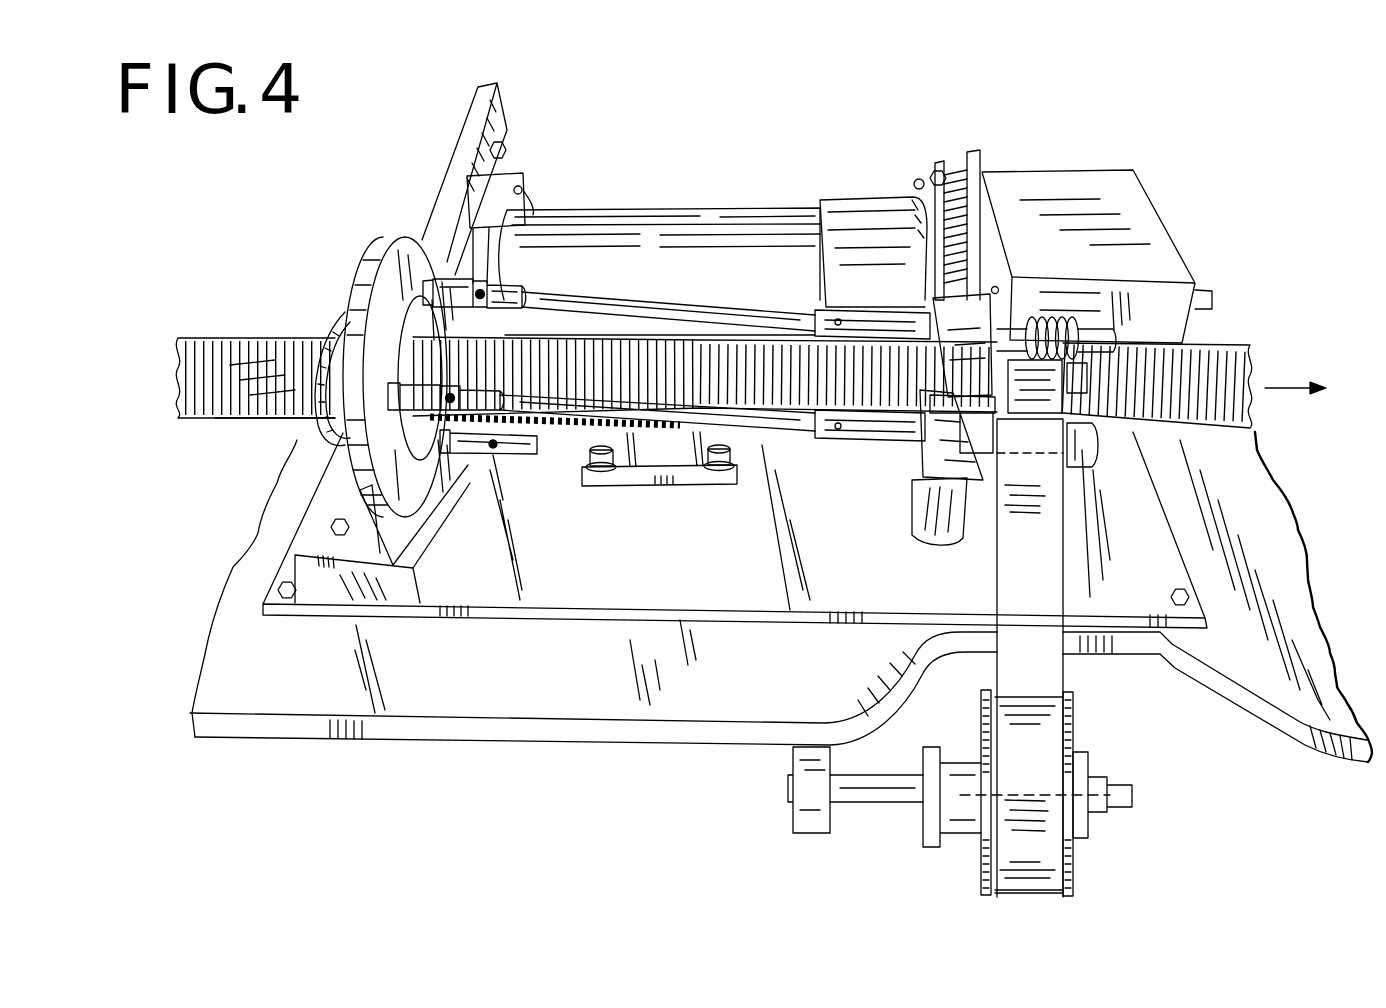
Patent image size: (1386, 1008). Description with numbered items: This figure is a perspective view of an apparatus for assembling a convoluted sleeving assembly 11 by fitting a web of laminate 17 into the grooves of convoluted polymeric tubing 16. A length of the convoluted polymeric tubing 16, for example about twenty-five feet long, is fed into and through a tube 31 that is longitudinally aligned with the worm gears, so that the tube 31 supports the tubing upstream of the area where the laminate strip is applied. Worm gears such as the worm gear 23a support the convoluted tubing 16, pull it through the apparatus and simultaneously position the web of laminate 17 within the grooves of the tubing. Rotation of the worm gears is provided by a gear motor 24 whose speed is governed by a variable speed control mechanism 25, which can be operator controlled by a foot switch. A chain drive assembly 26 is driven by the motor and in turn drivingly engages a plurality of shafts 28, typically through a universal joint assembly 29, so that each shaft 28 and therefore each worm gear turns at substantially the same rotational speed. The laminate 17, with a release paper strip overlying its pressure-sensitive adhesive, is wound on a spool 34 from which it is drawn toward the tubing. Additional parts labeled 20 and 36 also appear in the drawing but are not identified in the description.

The convoluted sleeving assembly 11 is at (1232, 349).
The convoluted polymeric tubing 16 is at (208, 340).
The web of laminate 17 is at (1050, 668).
The rack 20 is at (553, 402).
The worm gear 23a is at (1090, 330).
The gear motor 24 is at (660, 214).
The variable speed control mechanism 25 is at (1058, 180).
The chain drive assembly 26 is at (342, 332).
The shaft 28 is at (776, 306).
The universal joint assembly 29 is at (512, 292).
The tube 31 is at (245, 420).
The spool 34 is at (1073, 856).
The carriage block 36 is at (1085, 380).